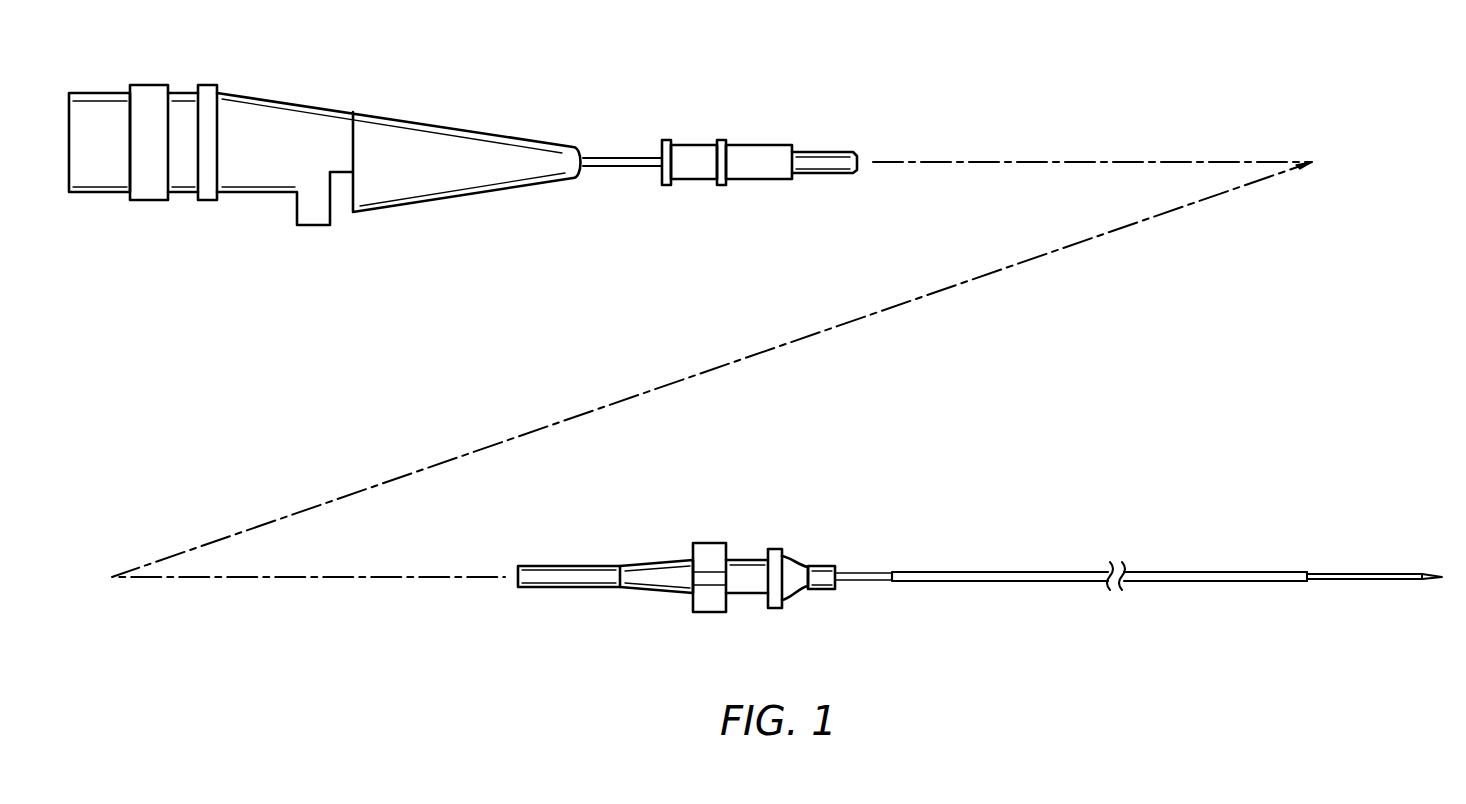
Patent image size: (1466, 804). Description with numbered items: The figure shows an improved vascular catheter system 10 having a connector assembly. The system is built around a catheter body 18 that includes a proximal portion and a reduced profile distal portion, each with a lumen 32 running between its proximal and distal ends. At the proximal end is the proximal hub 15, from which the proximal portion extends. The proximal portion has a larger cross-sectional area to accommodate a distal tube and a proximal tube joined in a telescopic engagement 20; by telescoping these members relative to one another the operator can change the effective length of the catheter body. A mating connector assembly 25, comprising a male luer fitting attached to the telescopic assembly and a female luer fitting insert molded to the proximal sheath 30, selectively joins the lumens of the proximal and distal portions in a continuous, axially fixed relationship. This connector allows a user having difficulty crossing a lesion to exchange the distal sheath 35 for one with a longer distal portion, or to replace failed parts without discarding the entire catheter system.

The vascular catheter system 10 is at (558, 72).
The proximal hub 15 is at (290, 103).
The catheter body 18 is at (1143, 240).
The telescopic engagement 20 is at (820, 135).
The mating connector assembly 25 is at (837, 552).
The proximal sheath 30 is at (1025, 572).
The lumen 32 is at (1180, 572).
The distal sheath 35 is at (1350, 573).